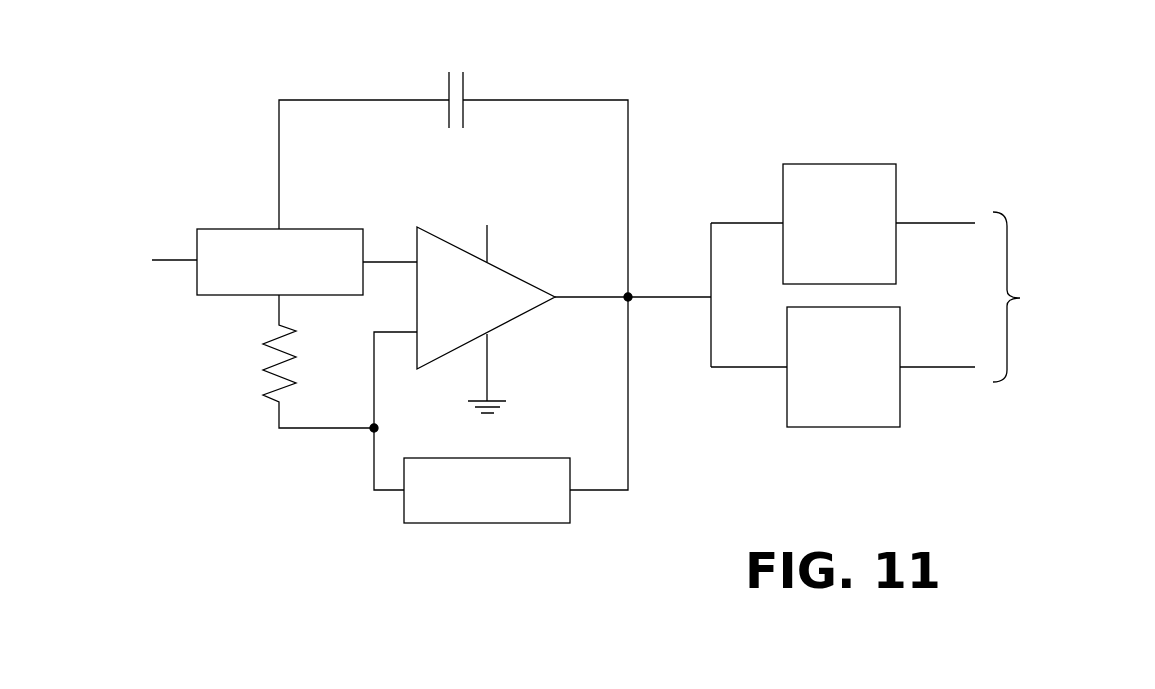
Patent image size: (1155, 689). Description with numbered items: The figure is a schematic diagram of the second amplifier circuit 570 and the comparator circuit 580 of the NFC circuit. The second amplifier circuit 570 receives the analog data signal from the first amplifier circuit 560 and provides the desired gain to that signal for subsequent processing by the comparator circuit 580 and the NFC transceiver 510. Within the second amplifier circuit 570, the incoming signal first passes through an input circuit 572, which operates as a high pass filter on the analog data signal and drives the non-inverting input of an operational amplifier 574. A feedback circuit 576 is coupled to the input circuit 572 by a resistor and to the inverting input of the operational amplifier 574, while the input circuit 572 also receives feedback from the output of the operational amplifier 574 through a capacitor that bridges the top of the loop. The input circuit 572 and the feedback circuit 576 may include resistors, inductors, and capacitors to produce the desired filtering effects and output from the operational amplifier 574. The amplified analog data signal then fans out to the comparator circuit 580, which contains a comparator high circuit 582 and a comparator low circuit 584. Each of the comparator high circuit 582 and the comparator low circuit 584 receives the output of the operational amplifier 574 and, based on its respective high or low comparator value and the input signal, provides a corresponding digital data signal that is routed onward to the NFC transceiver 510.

The second amplifier circuit 570 is at (278, 58).
The input circuit 572 is at (297, 229).
The operational amplifier 574 is at (513, 271).
The feedback circuit 576 is at (430, 523).
The comparator circuit 580 is at (815, 98).
The comparator high circuit 582 is at (862, 164).
The comparator low circuit 584 is at (870, 427).
The first amplifier circuit 560 is at (136, 260).
The NFC transceiver 510 is at (1044, 297).